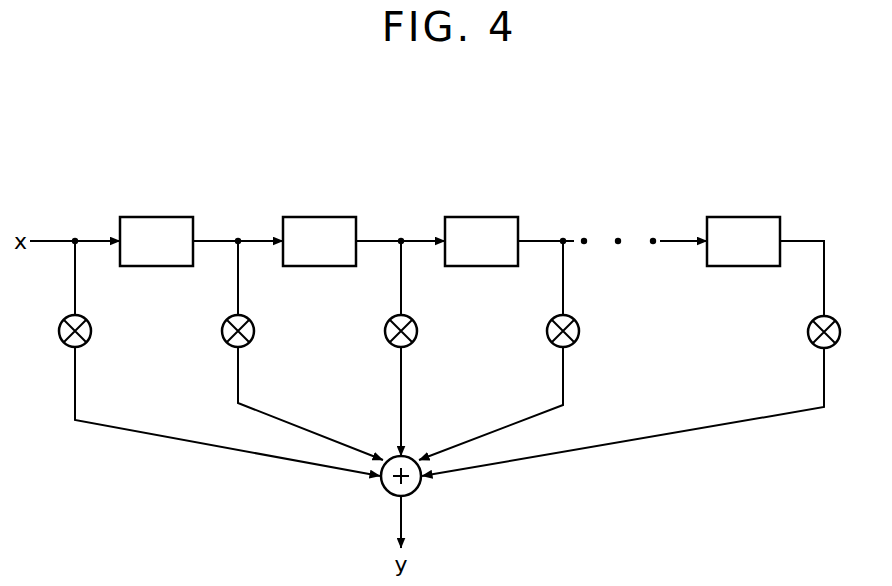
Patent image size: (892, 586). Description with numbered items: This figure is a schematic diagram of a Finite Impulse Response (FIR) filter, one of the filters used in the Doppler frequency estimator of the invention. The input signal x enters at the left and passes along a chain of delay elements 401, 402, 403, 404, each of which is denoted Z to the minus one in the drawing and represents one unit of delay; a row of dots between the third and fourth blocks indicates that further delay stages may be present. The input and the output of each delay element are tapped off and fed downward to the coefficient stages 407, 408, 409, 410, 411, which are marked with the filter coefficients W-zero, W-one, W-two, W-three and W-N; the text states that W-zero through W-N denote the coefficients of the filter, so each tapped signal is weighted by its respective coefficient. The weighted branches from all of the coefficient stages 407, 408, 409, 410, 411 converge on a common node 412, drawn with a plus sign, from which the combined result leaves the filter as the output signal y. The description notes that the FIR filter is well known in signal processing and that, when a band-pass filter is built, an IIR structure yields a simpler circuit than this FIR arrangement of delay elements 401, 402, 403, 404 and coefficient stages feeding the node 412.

The delay element 401 is at (155, 217).
The delay element 402 is at (319, 217).
The delay element 403 is at (482, 217).
The delay element 404 is at (744, 217).
The multiplier 407 is at (91, 331).
The multiplier 408 is at (254, 331).
The multiplier 409 is at (417, 331).
The multiplier 410 is at (579, 331).
The multiplier 411 is at (808, 332).
The adder 412 is at (413, 459).